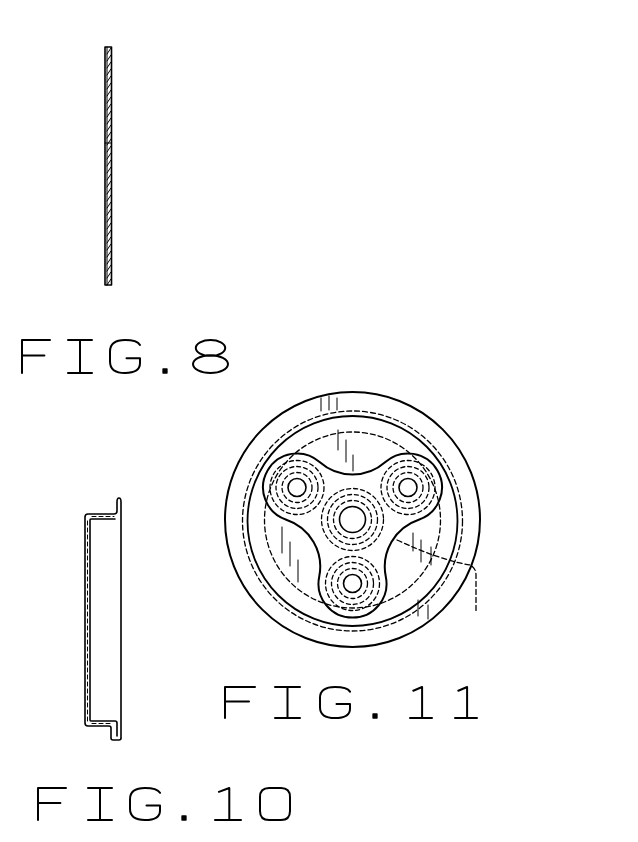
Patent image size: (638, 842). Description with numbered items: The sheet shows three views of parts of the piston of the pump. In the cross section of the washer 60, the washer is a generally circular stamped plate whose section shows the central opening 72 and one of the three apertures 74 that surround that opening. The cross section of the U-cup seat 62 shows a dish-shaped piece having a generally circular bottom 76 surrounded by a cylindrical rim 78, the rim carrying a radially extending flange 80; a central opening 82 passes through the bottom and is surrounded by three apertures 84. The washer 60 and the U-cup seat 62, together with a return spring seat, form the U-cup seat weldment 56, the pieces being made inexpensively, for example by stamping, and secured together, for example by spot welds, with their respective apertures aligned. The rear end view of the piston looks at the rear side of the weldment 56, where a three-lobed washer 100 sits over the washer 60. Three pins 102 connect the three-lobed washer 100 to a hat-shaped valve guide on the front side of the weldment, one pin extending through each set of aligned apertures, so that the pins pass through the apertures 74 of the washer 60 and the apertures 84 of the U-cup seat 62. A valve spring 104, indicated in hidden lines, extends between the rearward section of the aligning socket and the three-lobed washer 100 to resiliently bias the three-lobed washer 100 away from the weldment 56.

In FIG. 11, the U-cup seat weldment 56 is at (322, 485).
In FIG. 8, the washer 60 is at (155, 166).
In FIG. 11, the washer 60 is at (388, 408).
In FIG. 10, the U-cup seat 62 is at (123, 632).
In FIG. 8, the central opening 72 is at (112, 147).
In FIG. 8, the apertures 74 is at (112, 101).
In FIG. 10, the bottom 76 is at (90, 658).
In FIG. 10, the cylindrical rim 78 is at (103, 727).
In FIG. 10, the radially extending flange 80 is at (122, 735).
In FIG. 10, the central opening 82 is at (90, 607).
In FIG. 10, the apertures 84 is at (90, 558).
In FIG. 11, the three-lobed washer 100 is at (385, 563).
In FIG. 11, the pins 102 is at (414, 482).
In FIG. 11, the valve spring 104 is at (446, 590).